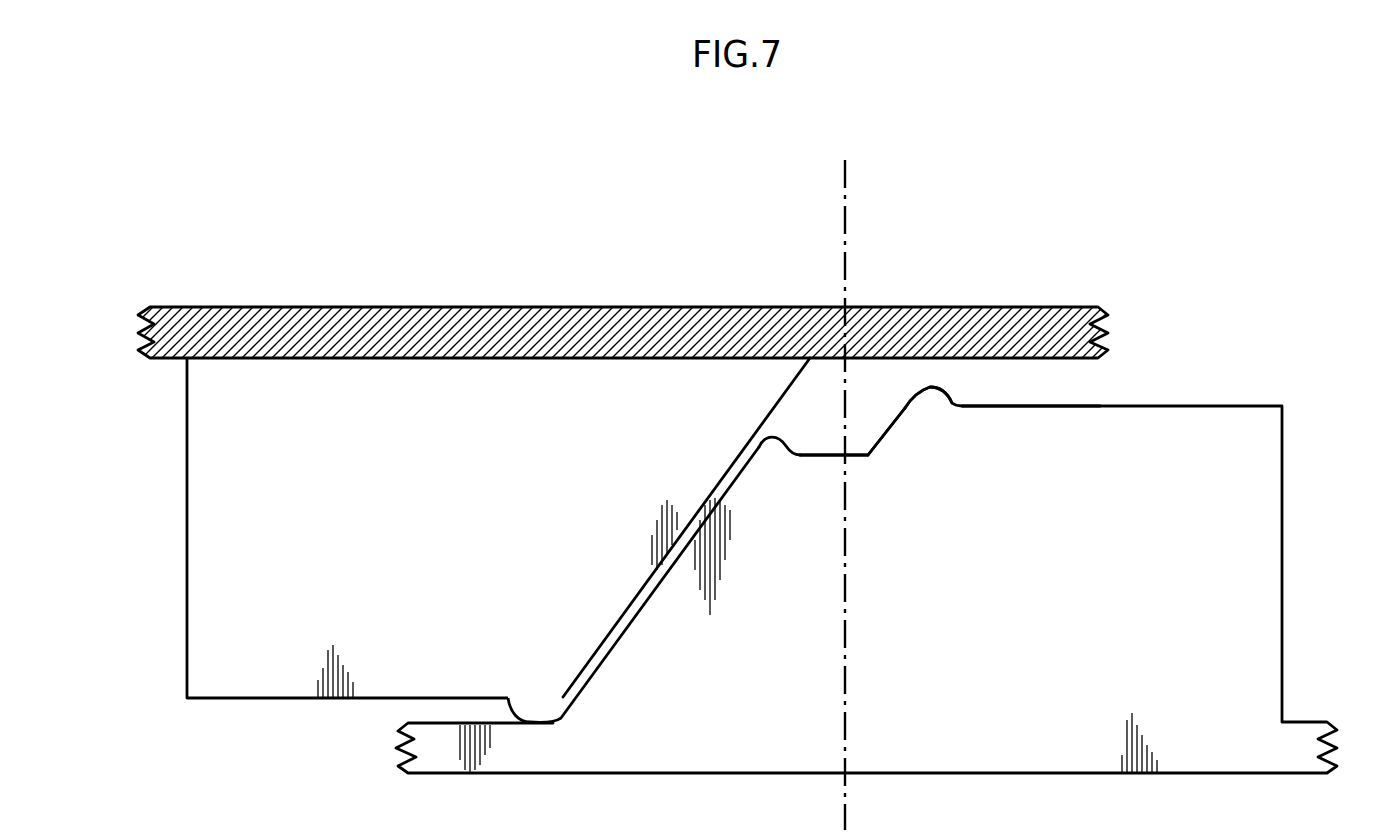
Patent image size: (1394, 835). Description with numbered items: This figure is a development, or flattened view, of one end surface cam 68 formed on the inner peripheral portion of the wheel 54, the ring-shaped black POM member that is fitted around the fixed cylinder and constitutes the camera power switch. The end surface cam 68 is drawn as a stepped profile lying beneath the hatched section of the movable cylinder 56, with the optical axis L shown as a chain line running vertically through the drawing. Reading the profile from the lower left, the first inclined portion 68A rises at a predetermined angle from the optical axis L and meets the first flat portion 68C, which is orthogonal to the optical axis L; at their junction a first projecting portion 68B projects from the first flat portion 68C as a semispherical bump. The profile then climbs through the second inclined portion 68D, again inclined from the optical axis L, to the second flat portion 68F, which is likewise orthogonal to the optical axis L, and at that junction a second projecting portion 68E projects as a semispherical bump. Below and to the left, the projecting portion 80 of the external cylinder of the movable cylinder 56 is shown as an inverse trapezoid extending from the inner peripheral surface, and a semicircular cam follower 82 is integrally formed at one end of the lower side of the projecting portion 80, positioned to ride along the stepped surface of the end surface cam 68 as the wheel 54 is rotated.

The wheel 54 is at (1229, 381).
The movable cylinder 56 is at (204, 283).
The end surface cam 68 is at (893, 500).
The first inclined portion 68A is at (598, 653).
The first projecting portion 68B is at (772, 437).
The first flat portion 68C is at (833, 452).
The second inclined portion 68D is at (888, 427).
The second projecting portion 68E is at (930, 387).
The second flat portion 68F is at (1032, 406).
The projecting portion 80 is at (223, 548).
The cam follower 82 is at (537, 712).
The optical axis L is at (846, 703).